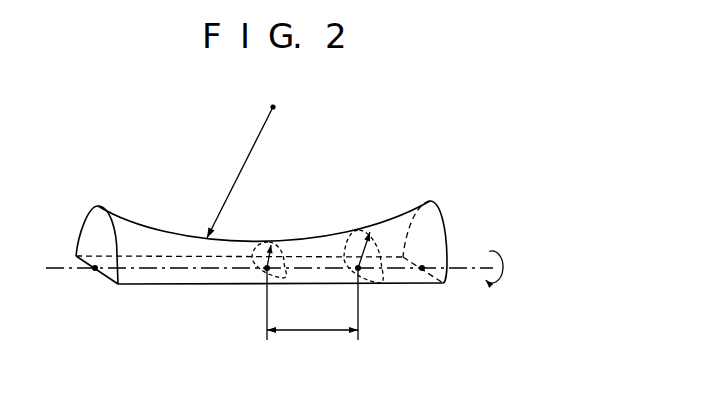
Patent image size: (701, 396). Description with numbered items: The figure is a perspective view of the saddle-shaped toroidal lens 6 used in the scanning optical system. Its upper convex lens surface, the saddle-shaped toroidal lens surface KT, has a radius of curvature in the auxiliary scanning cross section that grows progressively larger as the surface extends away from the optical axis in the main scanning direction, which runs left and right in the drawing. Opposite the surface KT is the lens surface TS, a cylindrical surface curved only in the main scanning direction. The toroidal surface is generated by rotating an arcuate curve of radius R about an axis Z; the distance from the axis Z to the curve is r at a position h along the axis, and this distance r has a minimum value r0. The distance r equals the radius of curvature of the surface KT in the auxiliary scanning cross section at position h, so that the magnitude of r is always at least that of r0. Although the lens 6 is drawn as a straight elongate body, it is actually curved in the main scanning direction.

The saddle-shaped toroidal lens 6 is at (477, 213).
The radius of the arcuate curve R is at (241, 171).
The minimum value of the distance r r0 is at (268, 243).
The distance from the axis Z to the arcuate curve r is at (360, 234).
The position along the axis Z h is at (312, 305).
The saddle-shaped toroidal lens surface KT is at (408, 222).
The lens surface TS is at (403, 274).
The axis Z is at (458, 272).